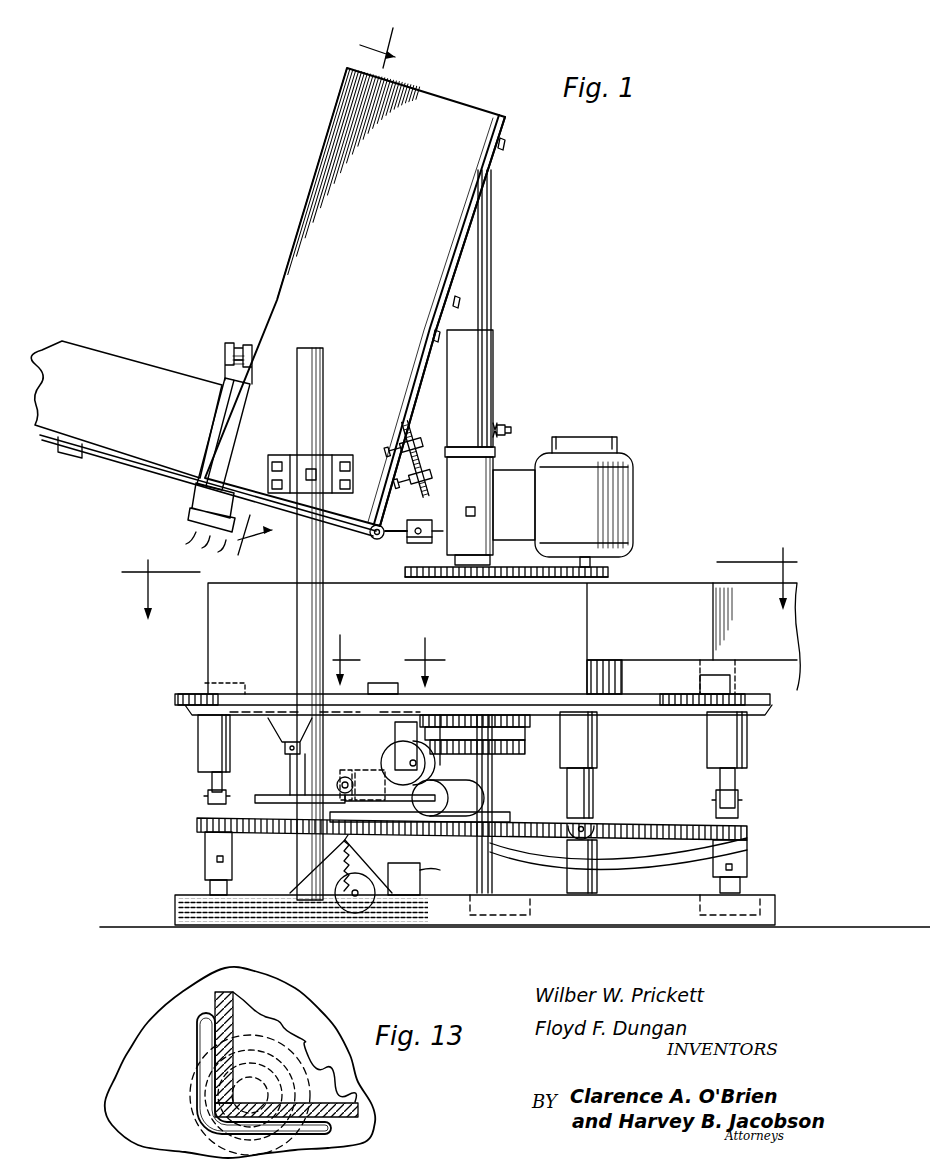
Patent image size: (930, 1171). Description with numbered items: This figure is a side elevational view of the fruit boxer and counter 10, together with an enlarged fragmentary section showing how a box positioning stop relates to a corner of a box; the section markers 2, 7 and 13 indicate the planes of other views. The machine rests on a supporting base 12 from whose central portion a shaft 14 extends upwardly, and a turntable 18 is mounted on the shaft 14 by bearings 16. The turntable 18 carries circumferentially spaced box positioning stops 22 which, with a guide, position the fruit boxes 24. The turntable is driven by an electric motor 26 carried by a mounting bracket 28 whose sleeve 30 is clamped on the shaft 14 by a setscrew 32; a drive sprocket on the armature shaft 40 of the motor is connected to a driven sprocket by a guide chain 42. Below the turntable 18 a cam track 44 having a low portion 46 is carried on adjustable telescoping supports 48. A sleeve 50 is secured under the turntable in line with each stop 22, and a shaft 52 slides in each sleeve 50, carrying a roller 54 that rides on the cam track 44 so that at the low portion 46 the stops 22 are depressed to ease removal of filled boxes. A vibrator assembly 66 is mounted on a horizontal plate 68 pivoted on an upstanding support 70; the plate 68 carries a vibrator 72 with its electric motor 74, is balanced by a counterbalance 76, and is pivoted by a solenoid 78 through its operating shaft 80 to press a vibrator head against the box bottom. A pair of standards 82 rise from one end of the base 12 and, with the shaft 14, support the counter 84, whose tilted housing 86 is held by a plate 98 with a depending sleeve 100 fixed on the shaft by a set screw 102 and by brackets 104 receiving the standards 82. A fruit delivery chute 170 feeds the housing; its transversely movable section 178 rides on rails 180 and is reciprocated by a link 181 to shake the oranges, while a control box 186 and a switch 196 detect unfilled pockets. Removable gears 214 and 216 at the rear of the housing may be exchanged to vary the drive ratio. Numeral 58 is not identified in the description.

In FIG. 1, the section line 2- 2 is at (332, 298).
In FIG. 1, the section line 7- 7 is at (459, 576).
In FIG. 1, the section line 13- 13 is at (386, 648).
In FIG. 1, the fruit boxer and counter 10 is at (156, 648).
In FIG. 1, the supporting base 12 is at (420, 915).
In FIG. 1, the shaft 14 is at (478, 800).
In FIG. 1, the bearings 16 is at (510, 744).
In FIG. 1, the turntable 18 is at (678, 706).
In FIG. 13, the turntable 18 is at (300, 1018).
In FIG. 1, the box positioning stops 22 is at (200, 682).
In FIG. 13, the box positioning stops 22 is at (196, 1028).
In FIG. 1, the fruit boxes 24 is at (208, 636).
In FIG. 13, the fruit boxes 24 is at (232, 1013).
In FIG. 1, the electric motor 26 is at (626, 512).
In FIG. 1, the mounting bracket 28 is at (513, 472).
In FIG. 1, the sleeve 30 is at (484, 503).
In FIG. 1, the setscrew 32 is at (476, 512).
In FIG. 1, the armature shaft 40 is at (600, 568).
In FIG. 1, the guide chain 42 is at (523, 579).
In FIG. 1, the cam track 44 is at (660, 822).
In FIG. 1, the low portion 46 is at (628, 857).
In FIG. 1, the telescoping supports 48 is at (205, 850).
In FIG. 1, the sleeve 50 is at (198, 748).
In FIG. 13, the sleeve 50 is at (188, 1086).
In FIG. 1, the shaft 52 is at (212, 782).
In FIG. 13, the shaft 52 is at (282, 1068).
In FIG. 1, the roller 54 is at (208, 810).
In FIG. 1, the table section 58 is at (640, 672).
In FIG. 1, the vibrator assembly 66 is at (298, 820).
In FIG. 1, the horizontal plate 68 is at (258, 794).
In FIG. 1, the upstanding support 70 is at (338, 845).
In FIG. 1, the vibrator 72 is at (438, 768).
In FIG. 1, the electric motor 74 is at (272, 728).
In FIG. 1, the counterbalance 76 is at (470, 788).
In FIG. 1, the solenoid 78 is at (397, 892).
In FIG. 1, the operating shaft 80 is at (476, 804).
In FIG. 1, the standards 82 is at (297, 556).
In FIG. 1, the counter 84 is at (272, 280).
In FIG. 1, the housing 86 is at (310, 202).
In FIG. 1, the plate 98 is at (480, 192).
In FIG. 1, the sleeve 100 is at (487, 270).
In FIG. 1, the set screw 102 is at (506, 427).
In FIG. 1, the brackets 104 is at (325, 458).
In FIG. 1, the fruit delivery chute 170 is at (103, 352).
In FIG. 1, the transversely movable section 178 is at (120, 475).
In FIG. 1, the rails 180 is at (68, 456).
In FIG. 1, the link 181 is at (238, 342).
In FIG. 1, the control box 186 is at (374, 537).
In FIG. 1, the switch 196 is at (210, 530).
In FIG. 1, the gear 214 is at (425, 418).
In FIG. 1, the gear 216 is at (415, 522).